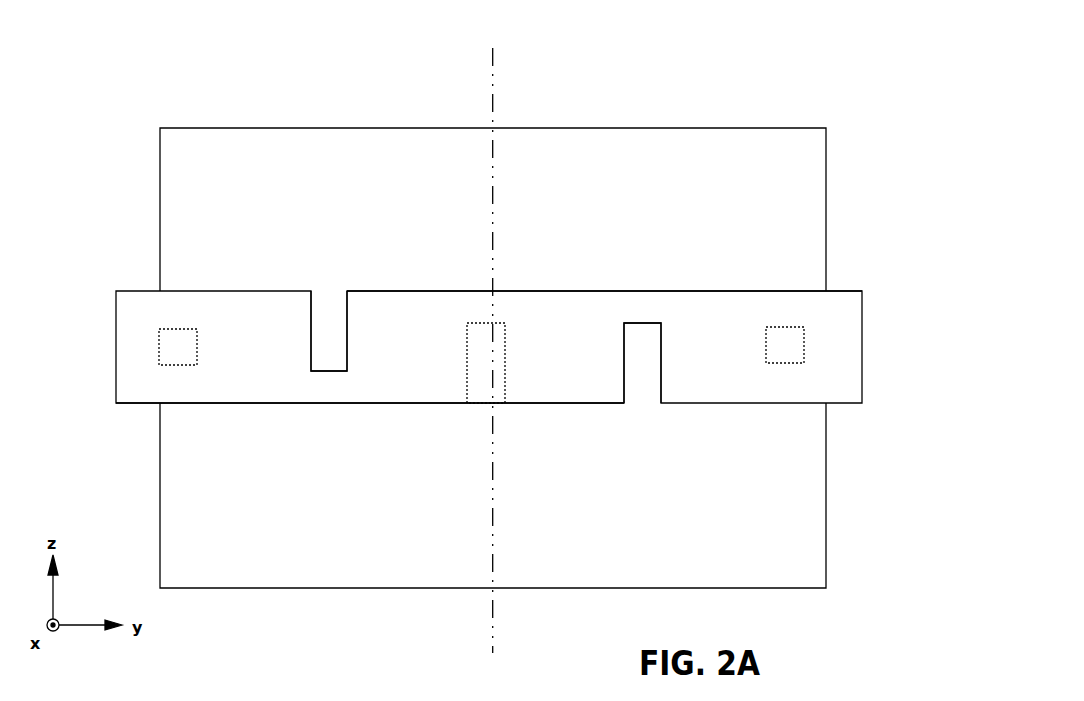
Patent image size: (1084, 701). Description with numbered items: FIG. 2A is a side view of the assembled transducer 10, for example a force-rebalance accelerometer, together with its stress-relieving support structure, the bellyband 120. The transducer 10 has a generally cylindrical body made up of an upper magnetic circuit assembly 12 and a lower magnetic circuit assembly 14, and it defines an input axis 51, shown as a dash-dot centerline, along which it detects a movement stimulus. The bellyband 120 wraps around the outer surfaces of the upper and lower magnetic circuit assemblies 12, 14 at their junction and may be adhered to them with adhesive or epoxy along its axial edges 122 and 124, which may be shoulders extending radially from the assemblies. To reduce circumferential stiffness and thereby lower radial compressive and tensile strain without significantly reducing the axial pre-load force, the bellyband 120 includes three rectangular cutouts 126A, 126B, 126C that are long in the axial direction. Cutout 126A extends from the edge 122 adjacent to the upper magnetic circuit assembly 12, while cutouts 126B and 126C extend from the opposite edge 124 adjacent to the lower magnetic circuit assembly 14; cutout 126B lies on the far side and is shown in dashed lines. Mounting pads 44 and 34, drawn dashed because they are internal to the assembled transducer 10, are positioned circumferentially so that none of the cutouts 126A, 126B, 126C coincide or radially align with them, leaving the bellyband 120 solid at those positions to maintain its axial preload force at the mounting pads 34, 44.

The transducer 10 is at (766, 65).
The upper magnetic circuit assembly 12 is at (807, 193).
The lower magnetic circuit assembly 14 is at (798, 524).
The mounting pad 34 is at (780, 335).
The mounting pad 44 is at (181, 329).
The input axis 51 is at (493, 108).
The stress relieving support structure (bellyband) 120 is at (837, 353).
The edge of bellyband 122 is at (369, 290).
The edge of bellyband 124 is at (360, 404).
The cutout 126A is at (325, 317).
The cutout 126B is at (479, 395).
The cutout 126C is at (637, 385).